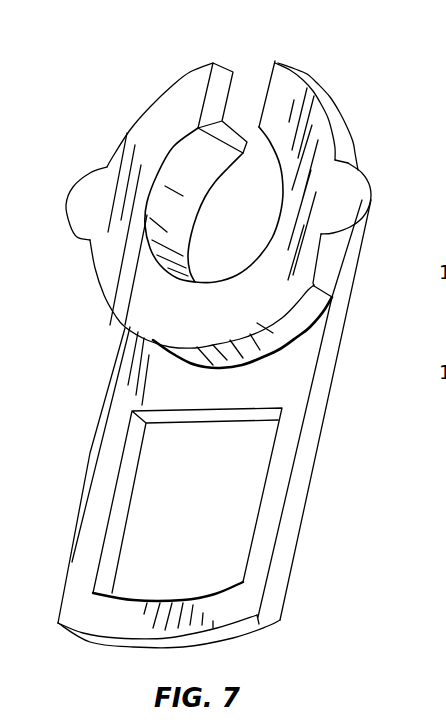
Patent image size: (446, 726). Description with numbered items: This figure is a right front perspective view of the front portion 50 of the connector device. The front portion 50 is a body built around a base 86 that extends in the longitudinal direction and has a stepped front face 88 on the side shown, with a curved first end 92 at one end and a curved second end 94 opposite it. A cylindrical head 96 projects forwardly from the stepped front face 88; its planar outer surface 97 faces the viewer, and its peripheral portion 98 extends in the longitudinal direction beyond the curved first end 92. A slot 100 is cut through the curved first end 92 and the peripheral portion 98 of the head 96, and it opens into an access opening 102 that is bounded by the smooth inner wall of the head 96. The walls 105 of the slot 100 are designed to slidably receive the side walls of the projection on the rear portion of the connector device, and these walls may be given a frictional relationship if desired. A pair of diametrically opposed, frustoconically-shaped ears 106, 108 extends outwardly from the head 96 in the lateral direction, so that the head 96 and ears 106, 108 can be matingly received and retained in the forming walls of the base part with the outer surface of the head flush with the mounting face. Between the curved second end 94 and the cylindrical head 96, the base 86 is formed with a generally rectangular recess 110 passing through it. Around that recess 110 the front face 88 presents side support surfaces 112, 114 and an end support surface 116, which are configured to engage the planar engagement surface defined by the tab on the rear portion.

The front portion 50 is at (221, 344).
The slot 100 is at (234, 198).
The walls 105 is at (225, 82).
The peripheral portion 98 is at (295, 78).
The curved first end 92 is at (356, 172).
The ear 108 is at (343, 198).
The ear 106 is at (85, 195).
The access opening 102 is at (213, 232).
The cylindrical head 96 is at (292, 307).
The planar outer surface 97 is at (163, 313).
The stepped front face 88 is at (132, 391).
The base 86 is at (196, 438).
The recess 110 is at (195, 497).
The side support surface 112 is at (80, 567).
The side support surface 114 is at (257, 562).
The end support surface 116 is at (106, 621).
The curved second end 94 is at (212, 637).